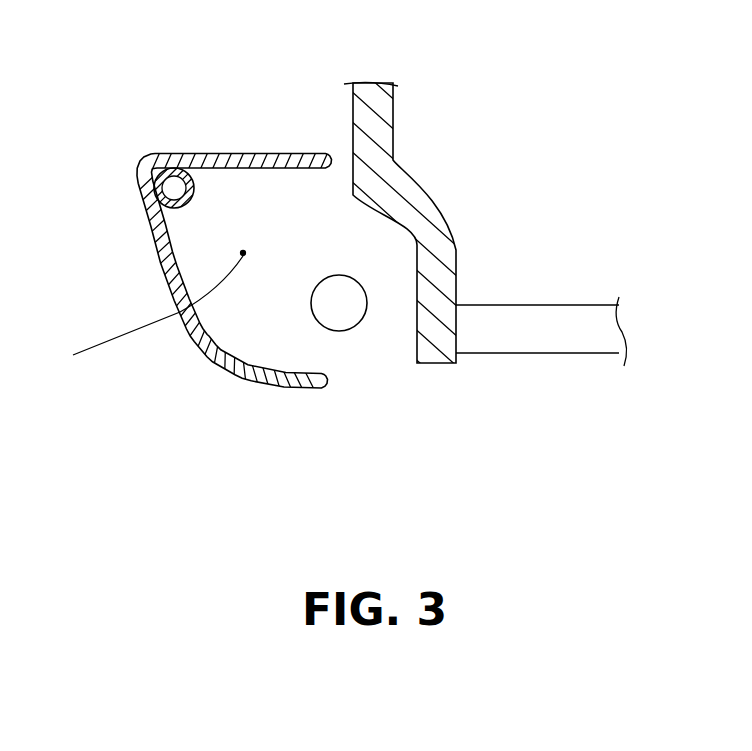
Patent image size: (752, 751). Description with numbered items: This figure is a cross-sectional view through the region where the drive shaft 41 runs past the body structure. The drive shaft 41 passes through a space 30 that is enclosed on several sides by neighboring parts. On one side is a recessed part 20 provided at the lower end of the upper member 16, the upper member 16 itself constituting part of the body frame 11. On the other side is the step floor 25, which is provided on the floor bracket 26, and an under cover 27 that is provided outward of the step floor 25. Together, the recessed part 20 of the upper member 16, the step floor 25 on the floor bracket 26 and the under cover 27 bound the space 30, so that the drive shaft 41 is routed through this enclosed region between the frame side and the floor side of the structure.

The body frame 11 is at (351, 120).
The upper member 16 is at (395, 113).
The recessed part 20 is at (415, 318).
The step floor 25 is at (233, 152).
The floor bracket 26 is at (187, 213).
The under cover 27 is at (187, 330).
The space 30 is at (140, 319).
The drive shaft 41 is at (358, 333).